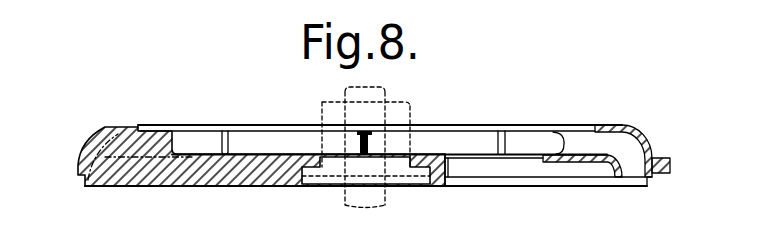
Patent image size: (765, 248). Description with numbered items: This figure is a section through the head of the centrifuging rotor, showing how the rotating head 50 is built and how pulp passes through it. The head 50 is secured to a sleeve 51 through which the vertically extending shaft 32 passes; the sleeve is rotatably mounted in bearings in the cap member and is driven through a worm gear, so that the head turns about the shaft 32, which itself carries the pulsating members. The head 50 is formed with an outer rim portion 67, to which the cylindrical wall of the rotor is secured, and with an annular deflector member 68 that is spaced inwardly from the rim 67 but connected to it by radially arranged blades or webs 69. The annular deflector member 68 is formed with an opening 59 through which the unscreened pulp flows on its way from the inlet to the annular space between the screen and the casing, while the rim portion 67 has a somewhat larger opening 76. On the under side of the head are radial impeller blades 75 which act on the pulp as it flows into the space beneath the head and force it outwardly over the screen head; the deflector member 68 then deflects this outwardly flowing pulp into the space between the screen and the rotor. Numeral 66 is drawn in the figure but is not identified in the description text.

The rotating head 50 is at (112, 147).
The sleeve 51 is at (322, 103).
The cover plate 66 is at (252, 138).
The radially arranged blades or webs 69 is at (204, 140).
The vertically extending shaft 32 is at (390, 95).
The opening in rim portion 76 is at (562, 128).
The outer rim portion 67 is at (654, 150).
The opening in deflector 59 is at (473, 156).
The radial impeller blades 75 is at (512, 178).
The annular deflector member 68 is at (589, 160).